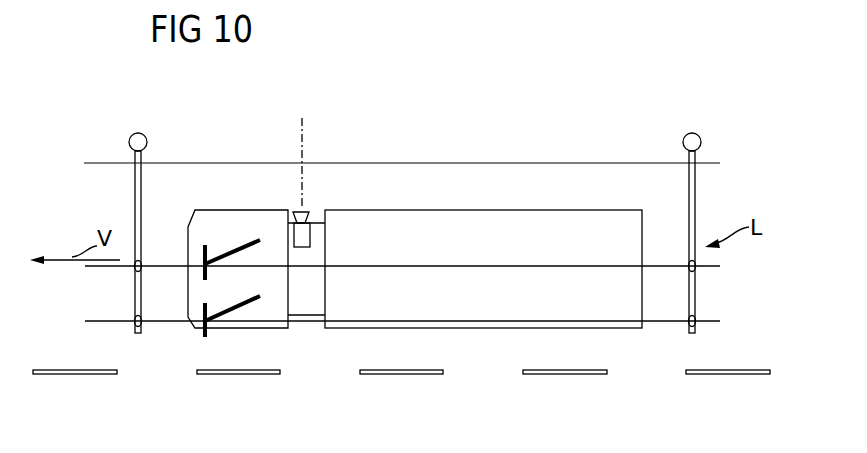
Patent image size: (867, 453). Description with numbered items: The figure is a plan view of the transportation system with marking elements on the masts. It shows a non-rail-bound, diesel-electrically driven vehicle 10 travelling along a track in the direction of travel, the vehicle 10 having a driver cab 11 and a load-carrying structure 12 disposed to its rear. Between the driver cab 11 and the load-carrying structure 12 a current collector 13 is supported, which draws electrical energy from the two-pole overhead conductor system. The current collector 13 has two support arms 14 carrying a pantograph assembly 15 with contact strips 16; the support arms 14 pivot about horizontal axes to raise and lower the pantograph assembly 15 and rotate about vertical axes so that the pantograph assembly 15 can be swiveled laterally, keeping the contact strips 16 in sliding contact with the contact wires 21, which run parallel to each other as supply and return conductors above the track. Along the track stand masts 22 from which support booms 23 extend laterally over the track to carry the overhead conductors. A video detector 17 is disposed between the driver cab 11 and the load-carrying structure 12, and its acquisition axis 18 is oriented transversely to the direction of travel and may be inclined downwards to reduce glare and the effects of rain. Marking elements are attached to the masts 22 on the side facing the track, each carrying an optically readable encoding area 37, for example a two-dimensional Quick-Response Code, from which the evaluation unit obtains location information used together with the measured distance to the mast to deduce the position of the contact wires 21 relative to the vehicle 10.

The vehicle 10 is at (396, 269).
The driver cab 11 is at (230, 210).
The load-carrying structure 12 is at (553, 210).
The current collector 13 is at (247, 345).
The support arms 14 is at (240, 252).
The pantograph assembly 15 is at (203, 225).
The contact strips 16 is at (204, 280).
The video detector 17 is at (305, 234).
The acquisition axis 18 is at (302, 123).
The contact wires 21 is at (97, 266).
The masts 22 is at (133, 140).
The support booms 23 is at (135, 195).
The encoding area 37 is at (150, 152).